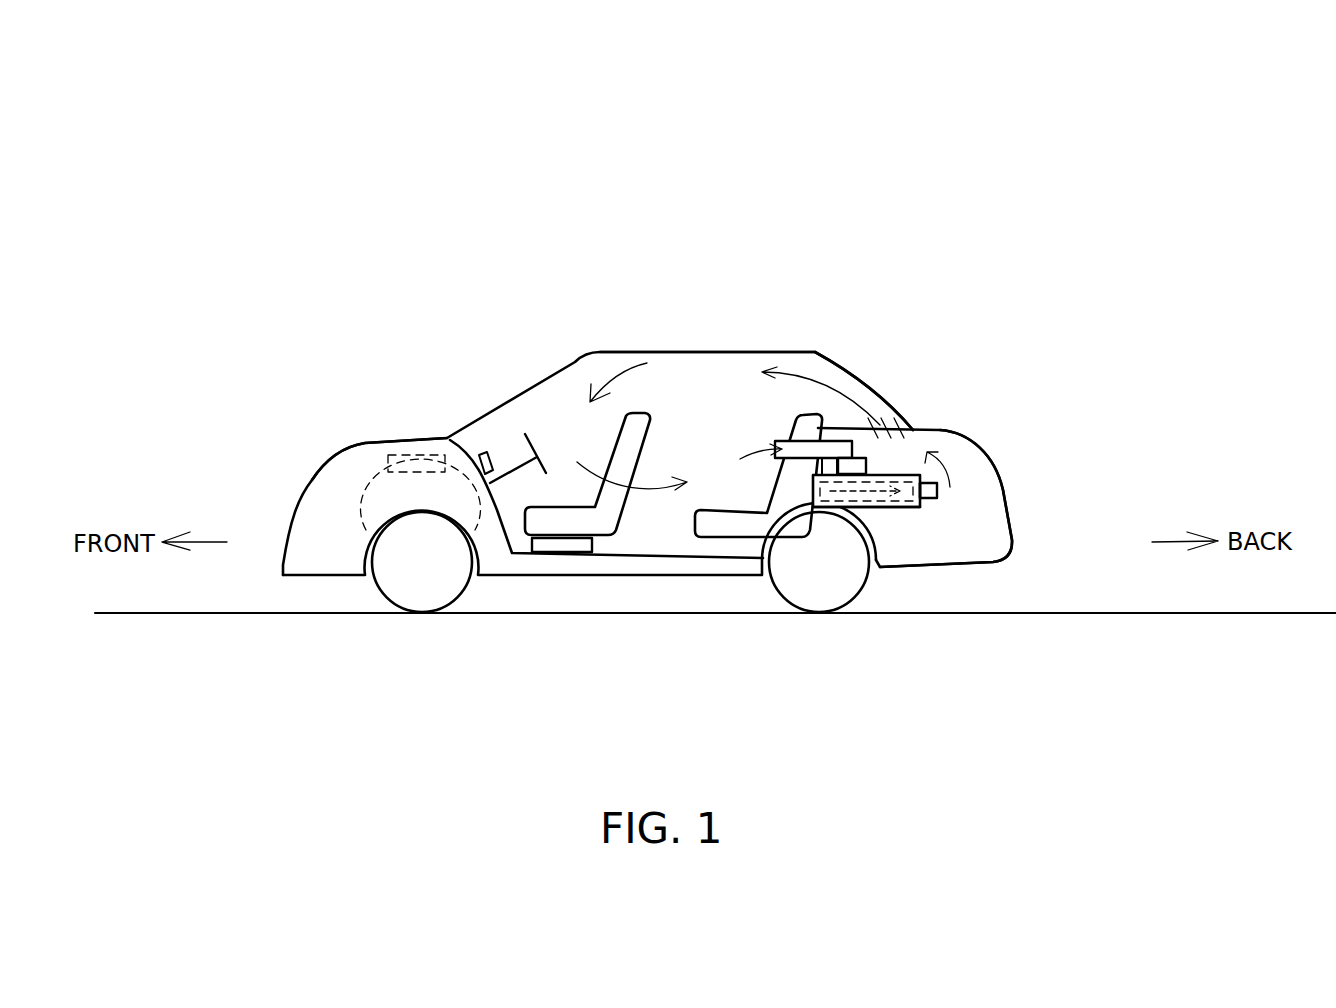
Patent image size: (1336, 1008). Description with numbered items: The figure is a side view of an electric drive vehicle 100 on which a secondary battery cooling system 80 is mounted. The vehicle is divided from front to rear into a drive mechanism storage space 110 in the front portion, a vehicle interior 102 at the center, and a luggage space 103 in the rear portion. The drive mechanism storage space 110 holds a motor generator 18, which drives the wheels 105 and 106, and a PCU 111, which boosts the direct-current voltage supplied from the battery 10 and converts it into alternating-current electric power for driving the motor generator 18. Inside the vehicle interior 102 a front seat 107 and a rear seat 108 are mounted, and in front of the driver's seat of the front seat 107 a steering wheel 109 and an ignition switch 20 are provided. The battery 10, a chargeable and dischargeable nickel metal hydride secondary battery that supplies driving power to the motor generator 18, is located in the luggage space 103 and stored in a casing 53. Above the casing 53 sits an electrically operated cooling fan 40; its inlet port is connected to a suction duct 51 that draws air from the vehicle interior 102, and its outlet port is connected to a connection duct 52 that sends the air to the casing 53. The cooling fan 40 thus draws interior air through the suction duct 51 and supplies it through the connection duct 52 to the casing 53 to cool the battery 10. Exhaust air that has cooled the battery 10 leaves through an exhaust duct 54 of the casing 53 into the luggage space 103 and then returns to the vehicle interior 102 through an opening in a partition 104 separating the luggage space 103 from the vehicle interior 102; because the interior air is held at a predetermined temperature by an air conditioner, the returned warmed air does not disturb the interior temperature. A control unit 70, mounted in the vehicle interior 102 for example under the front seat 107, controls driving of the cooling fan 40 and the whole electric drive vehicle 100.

The electric drive vehicle 100 is at (1208, 200).
The vehicle interior 102 is at (702, 385).
The luggage space 103 is at (970, 517).
The partition 104 is at (877, 433).
The wheel 105 is at (413, 593).
The wheel 106 is at (820, 593).
The front seat 107 is at (608, 540).
The rear seat 108 is at (715, 540).
The steering wheel 109 is at (532, 453).
The drive mechanism storage space 110 is at (343, 450).
The PCU 111 is at (407, 452).
The motor generator 18 is at (360, 497).
The ignition switch 20 is at (488, 453).
The electrically operated cooling fan 40 is at (867, 467).
The suction duct 51 is at (837, 441).
The connection duct 52 is at (829, 466).
The casing 53 is at (923, 503).
The exhaust duct 54 is at (933, 500).
The control unit 70 is at (557, 550).
The secondary battery cooling system 80 is at (982, 489).
The battery 10 is at (895, 508).